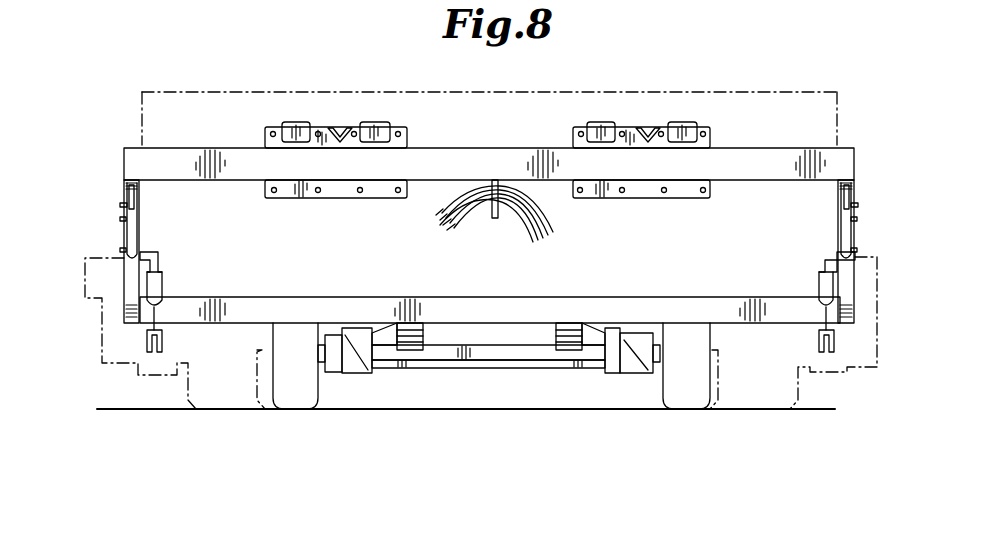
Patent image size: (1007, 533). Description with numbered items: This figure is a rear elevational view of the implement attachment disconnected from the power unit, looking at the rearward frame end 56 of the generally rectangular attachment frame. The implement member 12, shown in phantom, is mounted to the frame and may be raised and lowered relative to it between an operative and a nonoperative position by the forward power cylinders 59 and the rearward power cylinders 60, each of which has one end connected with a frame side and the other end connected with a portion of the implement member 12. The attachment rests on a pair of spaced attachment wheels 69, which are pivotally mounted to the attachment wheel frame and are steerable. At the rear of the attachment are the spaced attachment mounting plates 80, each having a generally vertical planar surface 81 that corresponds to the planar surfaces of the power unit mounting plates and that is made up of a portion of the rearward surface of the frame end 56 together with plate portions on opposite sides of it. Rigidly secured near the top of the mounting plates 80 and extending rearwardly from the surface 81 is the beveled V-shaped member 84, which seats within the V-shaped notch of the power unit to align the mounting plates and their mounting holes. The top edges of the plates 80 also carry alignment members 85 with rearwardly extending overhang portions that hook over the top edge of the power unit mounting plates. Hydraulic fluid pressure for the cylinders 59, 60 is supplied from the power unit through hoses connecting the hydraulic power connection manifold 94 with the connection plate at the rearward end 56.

The implement member 12 is at (877, 343).
The rearward frame end 56 is at (760, 155).
The forward power cylinder 59 is at (158, 285).
The rearward power cylinder 60 is at (132, 237).
The attachment wheel 69 is at (285, 393).
The attachment mounting plate 80 is at (300, 198).
The vertical planar surface 81 is at (640, 198).
The V-shaped member 84 is at (337, 124).
The alignment member 85 is at (376, 125).
The hydraulic power connection manifold 94 is at (520, 208).